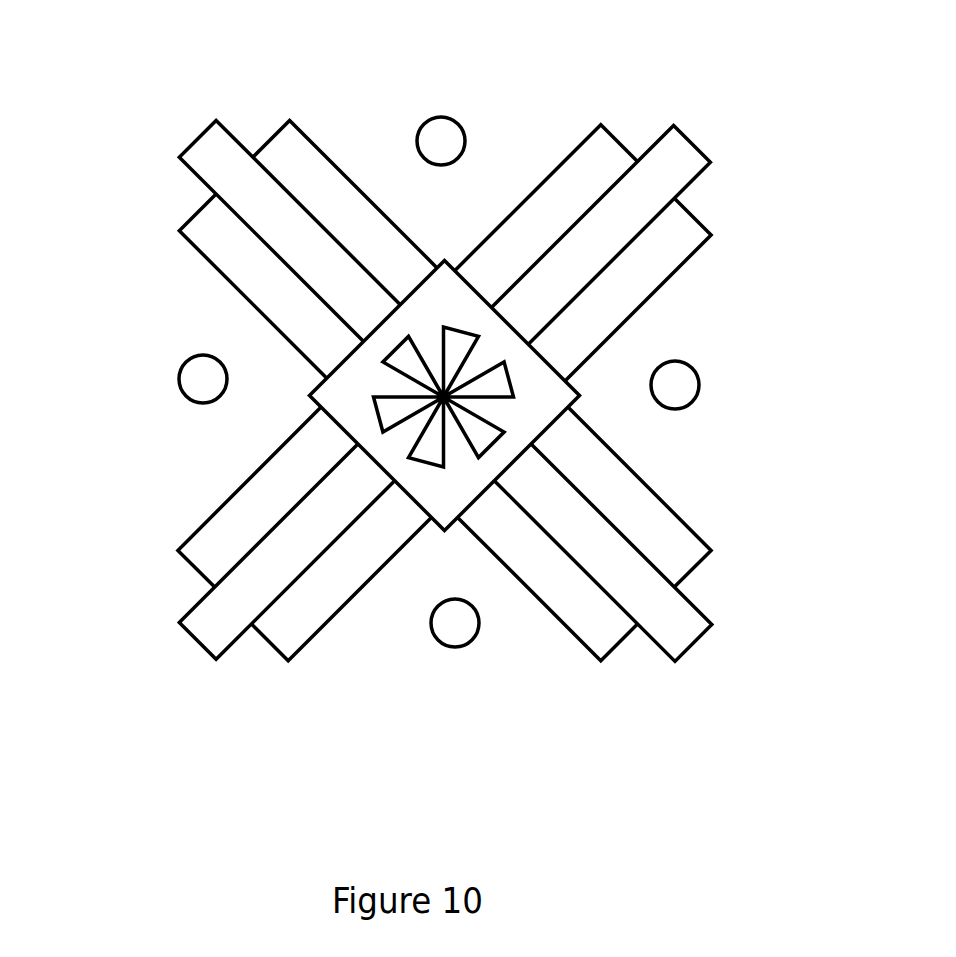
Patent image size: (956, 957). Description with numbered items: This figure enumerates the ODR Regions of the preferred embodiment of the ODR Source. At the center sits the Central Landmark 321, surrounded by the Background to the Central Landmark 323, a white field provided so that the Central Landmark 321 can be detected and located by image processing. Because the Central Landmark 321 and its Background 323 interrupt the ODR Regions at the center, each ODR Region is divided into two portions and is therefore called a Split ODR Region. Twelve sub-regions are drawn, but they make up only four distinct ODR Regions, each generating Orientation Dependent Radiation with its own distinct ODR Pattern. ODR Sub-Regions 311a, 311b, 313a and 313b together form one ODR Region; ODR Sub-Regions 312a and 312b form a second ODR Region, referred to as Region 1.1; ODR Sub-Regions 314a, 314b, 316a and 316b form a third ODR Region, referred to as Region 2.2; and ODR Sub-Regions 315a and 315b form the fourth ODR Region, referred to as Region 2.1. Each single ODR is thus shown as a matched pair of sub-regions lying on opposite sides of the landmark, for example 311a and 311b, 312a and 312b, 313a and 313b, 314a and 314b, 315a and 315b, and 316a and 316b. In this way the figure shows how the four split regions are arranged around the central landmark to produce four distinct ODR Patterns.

The ODR Sub-Region 311a is at (600, 143).
The ODR Sub-Region 312a is at (677, 145).
The ODR Sub-Region 313a is at (677, 237).
The ODR Sub-Region 314a is at (282, 143).
The ODR Sub-Region 315a is at (208, 145).
The ODR Sub-Region 316a is at (196, 237).
The ODR Sub-Region 311b is at (195, 542).
The ODR Sub-Region 312b is at (212, 633).
The ODR Sub-Region 313b is at (292, 632).
The ODR Sub-Region 314b is at (687, 553).
The ODR Sub-Region 315b is at (678, 628).
The ODR Sub-Region 316b is at (602, 638).
The Central Landmark 321 is at (408, 357).
The Background to the Central Landmark 323 is at (442, 283).